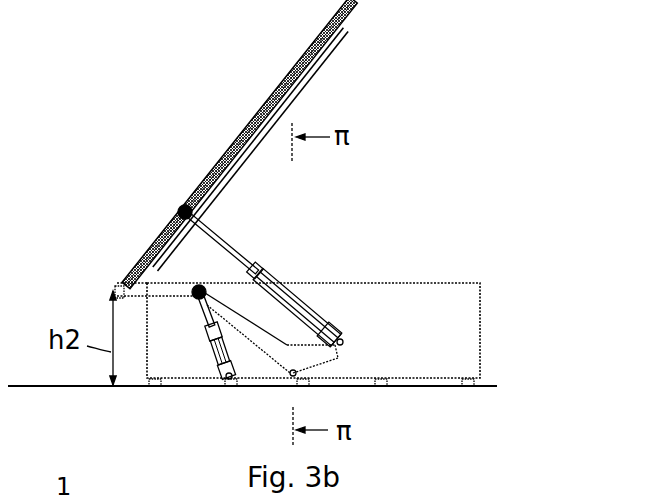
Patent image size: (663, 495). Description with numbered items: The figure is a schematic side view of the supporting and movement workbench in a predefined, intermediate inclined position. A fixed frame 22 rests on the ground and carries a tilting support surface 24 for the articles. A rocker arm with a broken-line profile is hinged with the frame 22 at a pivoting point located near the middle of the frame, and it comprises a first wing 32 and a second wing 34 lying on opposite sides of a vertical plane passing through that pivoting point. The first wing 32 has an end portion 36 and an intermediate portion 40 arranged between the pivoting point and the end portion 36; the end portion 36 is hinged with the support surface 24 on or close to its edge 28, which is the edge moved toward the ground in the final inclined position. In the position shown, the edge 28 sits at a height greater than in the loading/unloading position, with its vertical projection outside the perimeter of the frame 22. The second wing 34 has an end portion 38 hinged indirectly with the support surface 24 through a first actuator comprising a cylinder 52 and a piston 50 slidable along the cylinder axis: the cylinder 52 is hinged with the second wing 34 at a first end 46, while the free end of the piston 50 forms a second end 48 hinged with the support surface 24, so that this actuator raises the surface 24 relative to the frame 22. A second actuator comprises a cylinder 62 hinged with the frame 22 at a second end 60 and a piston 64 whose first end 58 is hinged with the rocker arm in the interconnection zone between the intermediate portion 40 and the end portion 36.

The fixed frame 22 is at (482, 330).
The support surface 24 is at (270, 84).
The edge 28 is at (122, 278).
The first wing 32 is at (217, 283).
The second wing 34 is at (327, 380).
The end portion 36 is at (116, 291).
The end portion 38 is at (340, 358).
The intermediate portion 40 is at (254, 332).
The first end 46 is at (348, 342).
The second end 48 is at (181, 206).
The piston 50 is at (218, 238).
The cylinder 52 is at (330, 324).
The first end 58 is at (193, 289).
The second end 60 is at (228, 374).
The cylinder 62 is at (218, 351).
The piston 64 is at (205, 312).